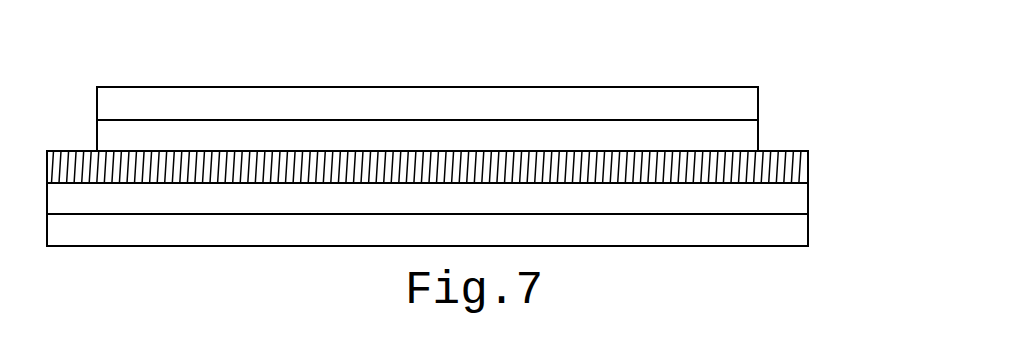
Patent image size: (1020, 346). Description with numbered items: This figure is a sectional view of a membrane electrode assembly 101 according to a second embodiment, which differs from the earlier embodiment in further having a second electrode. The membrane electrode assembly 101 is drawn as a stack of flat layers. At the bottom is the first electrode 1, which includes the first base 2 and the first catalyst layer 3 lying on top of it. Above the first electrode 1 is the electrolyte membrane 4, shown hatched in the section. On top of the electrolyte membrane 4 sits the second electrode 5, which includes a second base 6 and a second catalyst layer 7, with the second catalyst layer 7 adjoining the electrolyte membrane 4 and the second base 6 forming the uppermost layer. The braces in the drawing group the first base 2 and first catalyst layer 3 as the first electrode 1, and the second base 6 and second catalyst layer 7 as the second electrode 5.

The membrane electrode assembly 101 is at (62, 52).
The first electrode 1 is at (493, 215).
The first base 2 is at (780, 233).
The first catalyst layer 3 is at (780, 205).
The electrolyte membrane 4 is at (782, 173).
The second electrode 5 is at (502, 121).
The second base 6 is at (730, 113).
The second catalyst layer 7 is at (730, 141).